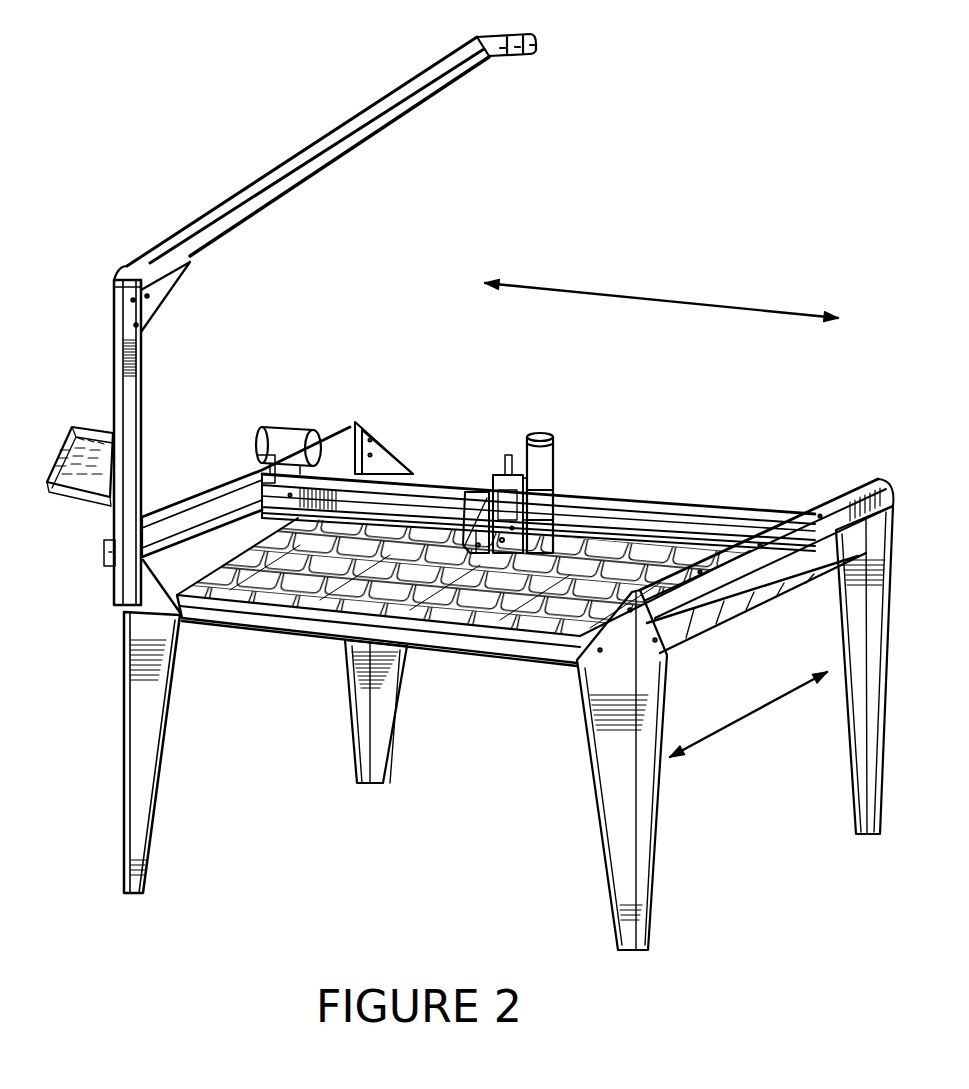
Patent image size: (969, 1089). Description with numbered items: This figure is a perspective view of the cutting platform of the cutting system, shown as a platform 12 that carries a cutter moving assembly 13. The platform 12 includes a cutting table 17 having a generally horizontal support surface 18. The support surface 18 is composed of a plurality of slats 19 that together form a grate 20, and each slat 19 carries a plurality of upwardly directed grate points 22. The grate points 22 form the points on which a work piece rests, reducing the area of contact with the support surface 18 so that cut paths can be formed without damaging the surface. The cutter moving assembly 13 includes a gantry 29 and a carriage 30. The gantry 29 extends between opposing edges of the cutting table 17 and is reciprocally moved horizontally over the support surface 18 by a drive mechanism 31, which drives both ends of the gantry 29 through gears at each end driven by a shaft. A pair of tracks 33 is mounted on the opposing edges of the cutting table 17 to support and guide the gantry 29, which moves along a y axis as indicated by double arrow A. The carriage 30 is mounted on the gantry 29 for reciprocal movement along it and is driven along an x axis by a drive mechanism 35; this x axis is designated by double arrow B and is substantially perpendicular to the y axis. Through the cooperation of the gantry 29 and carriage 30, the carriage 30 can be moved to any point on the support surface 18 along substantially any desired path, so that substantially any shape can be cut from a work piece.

The platform 12 is at (449, 664).
The cutter moving assembly 13 is at (576, 479).
The cutting table 17 is at (170, 815).
The support surface 18 is at (250, 610).
The slats 19 is at (512, 617).
The grate 20 is at (300, 565).
The grate points 22 is at (410, 535).
The gantry 29 is at (680, 533).
The carriage 30 is at (497, 478).
The drive mechanism 31 is at (288, 442).
The tracks 33 is at (192, 547).
The drive mechanism 35 is at (543, 467).
The double arrow A is at (723, 723).
The double arrow B is at (675, 298).